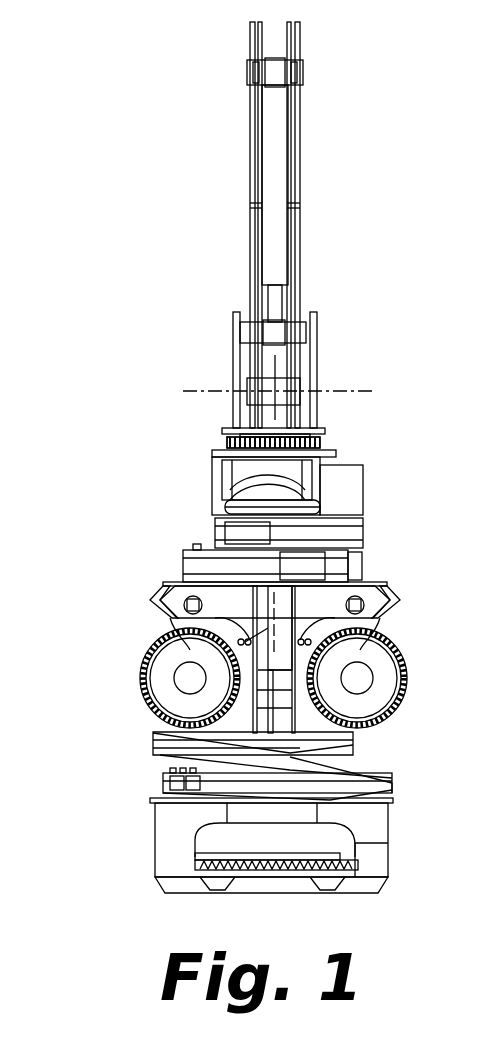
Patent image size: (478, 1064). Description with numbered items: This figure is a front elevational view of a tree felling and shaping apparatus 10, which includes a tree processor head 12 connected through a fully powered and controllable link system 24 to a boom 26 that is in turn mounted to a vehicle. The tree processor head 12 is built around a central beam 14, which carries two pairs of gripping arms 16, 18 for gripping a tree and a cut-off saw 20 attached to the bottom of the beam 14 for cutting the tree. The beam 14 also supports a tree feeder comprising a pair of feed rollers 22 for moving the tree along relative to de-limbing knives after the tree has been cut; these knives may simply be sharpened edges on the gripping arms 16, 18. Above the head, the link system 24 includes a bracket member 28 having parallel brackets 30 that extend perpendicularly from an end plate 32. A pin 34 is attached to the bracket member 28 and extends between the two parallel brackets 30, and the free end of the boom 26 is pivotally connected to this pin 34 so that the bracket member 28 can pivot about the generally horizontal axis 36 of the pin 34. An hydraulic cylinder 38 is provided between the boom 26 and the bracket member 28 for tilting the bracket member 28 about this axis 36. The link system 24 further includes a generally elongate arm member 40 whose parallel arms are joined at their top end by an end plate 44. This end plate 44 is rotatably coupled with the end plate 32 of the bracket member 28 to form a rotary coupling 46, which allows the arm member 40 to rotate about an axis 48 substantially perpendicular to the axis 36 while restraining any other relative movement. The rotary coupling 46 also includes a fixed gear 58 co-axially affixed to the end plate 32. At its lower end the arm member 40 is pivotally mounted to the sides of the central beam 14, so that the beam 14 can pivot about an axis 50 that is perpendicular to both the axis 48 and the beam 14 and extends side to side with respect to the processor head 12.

The tree felling and shaping apparatus 10 is at (360, 348).
The tree processor head 12 is at (390, 563).
The central beam 14 is at (150, 655).
The gripping arms 16 is at (353, 535).
The gripping arms 18 is at (152, 745).
The cut-off saw 20 is at (330, 866).
The feed rollers 22 is at (140, 678).
The link system 24 is at (403, 480).
The boom 26 is at (250, 132).
The bracket member 28 is at (233, 358).
The parallel brackets 30 is at (233, 328).
The end plate 32 is at (228, 428).
The pin 34 is at (247, 380).
The axis 36 is at (348, 391).
The hydraulic cylinder 38 is at (274, 180).
The arm member 40 is at (218, 467).
The end plate 44 is at (335, 445).
The rotary coupling 46 is at (207, 441).
The axis 48 is at (240, 478).
The axis 50 is at (400, 790).
The fixed gear 58 is at (322, 436).